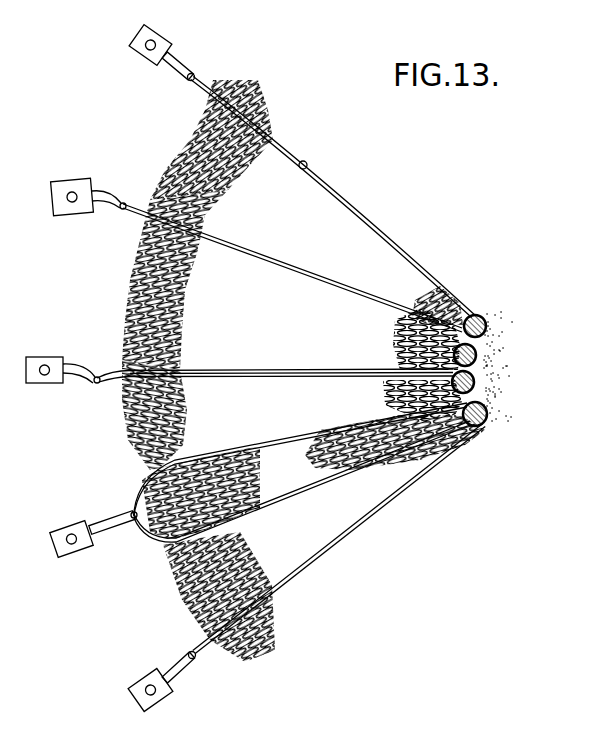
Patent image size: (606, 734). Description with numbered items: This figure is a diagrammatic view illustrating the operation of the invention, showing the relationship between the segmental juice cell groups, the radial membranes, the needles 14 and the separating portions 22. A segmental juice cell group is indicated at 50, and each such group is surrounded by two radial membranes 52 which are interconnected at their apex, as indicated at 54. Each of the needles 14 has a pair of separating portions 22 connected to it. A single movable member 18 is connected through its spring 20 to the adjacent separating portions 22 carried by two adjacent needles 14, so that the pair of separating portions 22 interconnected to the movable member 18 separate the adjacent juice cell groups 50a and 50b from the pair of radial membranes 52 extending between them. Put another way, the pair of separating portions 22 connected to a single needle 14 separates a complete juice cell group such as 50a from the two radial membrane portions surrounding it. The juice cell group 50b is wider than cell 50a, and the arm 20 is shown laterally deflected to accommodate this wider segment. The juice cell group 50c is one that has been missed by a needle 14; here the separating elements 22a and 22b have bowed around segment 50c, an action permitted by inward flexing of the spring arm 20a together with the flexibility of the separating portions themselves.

The needle 14 is at (489, 324).
The movable member 18 is at (72, 215).
The spring 20 is at (80, 381).
The spring arm 20a is at (115, 530).
The separating portion 22 is at (366, 220).
The separating element 22a is at (295, 433).
The separating element 22b is at (323, 490).
The segmental juice cell group 50 is at (128, 440).
The juice cell group 50a is at (277, 150).
The juice cell group 50b is at (130, 304).
The juice cell group 50c is at (352, 447).
The radial membrane 52 is at (290, 222).
The apex interconnection 54 is at (489, 356).